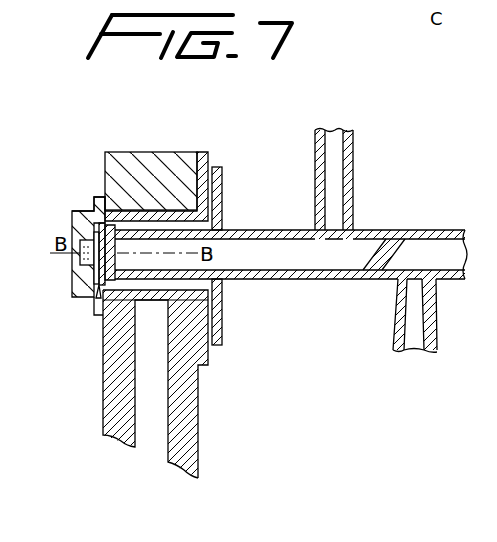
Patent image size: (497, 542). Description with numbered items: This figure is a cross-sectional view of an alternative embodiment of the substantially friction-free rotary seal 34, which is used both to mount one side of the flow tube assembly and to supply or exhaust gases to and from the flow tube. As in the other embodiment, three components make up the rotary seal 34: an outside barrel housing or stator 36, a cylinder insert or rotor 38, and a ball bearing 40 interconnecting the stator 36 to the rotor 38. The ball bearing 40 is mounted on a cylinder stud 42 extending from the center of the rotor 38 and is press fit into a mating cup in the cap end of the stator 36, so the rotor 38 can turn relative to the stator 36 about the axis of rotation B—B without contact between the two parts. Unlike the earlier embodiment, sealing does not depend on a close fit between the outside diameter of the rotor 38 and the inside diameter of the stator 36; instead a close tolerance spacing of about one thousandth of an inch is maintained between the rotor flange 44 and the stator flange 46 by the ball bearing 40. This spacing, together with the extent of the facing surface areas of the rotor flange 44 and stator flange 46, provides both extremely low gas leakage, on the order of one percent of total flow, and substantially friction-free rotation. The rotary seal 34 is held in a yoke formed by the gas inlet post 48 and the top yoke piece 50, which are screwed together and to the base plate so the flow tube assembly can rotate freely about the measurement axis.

The rotary seal 34 is at (246, 319).
The stator 36 is at (73, 288).
The rotor 38 is at (224, 274).
The ball bearing 40 is at (70, 212).
The cylinder stud 42 is at (96, 295).
The rotor flange 44 is at (222, 188).
The stator flange 46 is at (207, 152).
The gas inlet post 48 is at (193, 416).
The top yoke piece 50 is at (157, 163).